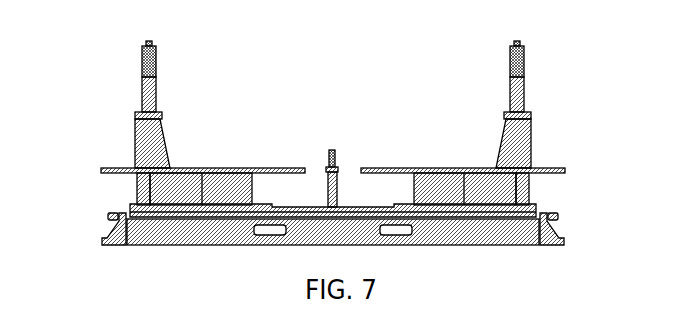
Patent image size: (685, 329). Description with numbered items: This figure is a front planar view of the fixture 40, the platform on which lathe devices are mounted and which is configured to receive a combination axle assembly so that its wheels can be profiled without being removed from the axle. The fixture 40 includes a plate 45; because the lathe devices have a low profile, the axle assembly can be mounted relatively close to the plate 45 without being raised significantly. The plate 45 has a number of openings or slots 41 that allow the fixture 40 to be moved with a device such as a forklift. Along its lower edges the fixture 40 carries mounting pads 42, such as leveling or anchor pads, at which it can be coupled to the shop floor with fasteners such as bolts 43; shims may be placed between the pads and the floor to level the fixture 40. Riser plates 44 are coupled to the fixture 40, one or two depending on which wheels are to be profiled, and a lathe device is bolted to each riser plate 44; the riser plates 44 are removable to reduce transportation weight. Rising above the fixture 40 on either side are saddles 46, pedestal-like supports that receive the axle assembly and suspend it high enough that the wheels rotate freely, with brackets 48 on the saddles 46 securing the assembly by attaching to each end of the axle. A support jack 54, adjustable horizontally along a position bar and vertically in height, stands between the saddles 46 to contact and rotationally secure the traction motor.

The fixture 40 is at (573, 23).
The slots 41 is at (270, 237).
The mounting pads 42 is at (105, 242).
The bolts 43 is at (108, 217).
The riser plates 44 is at (231, 173).
The plate 45 is at (290, 207).
The saddles 46 is at (142, 93).
The brackets 48 is at (142, 52).
The support jacks 54 is at (338, 172).